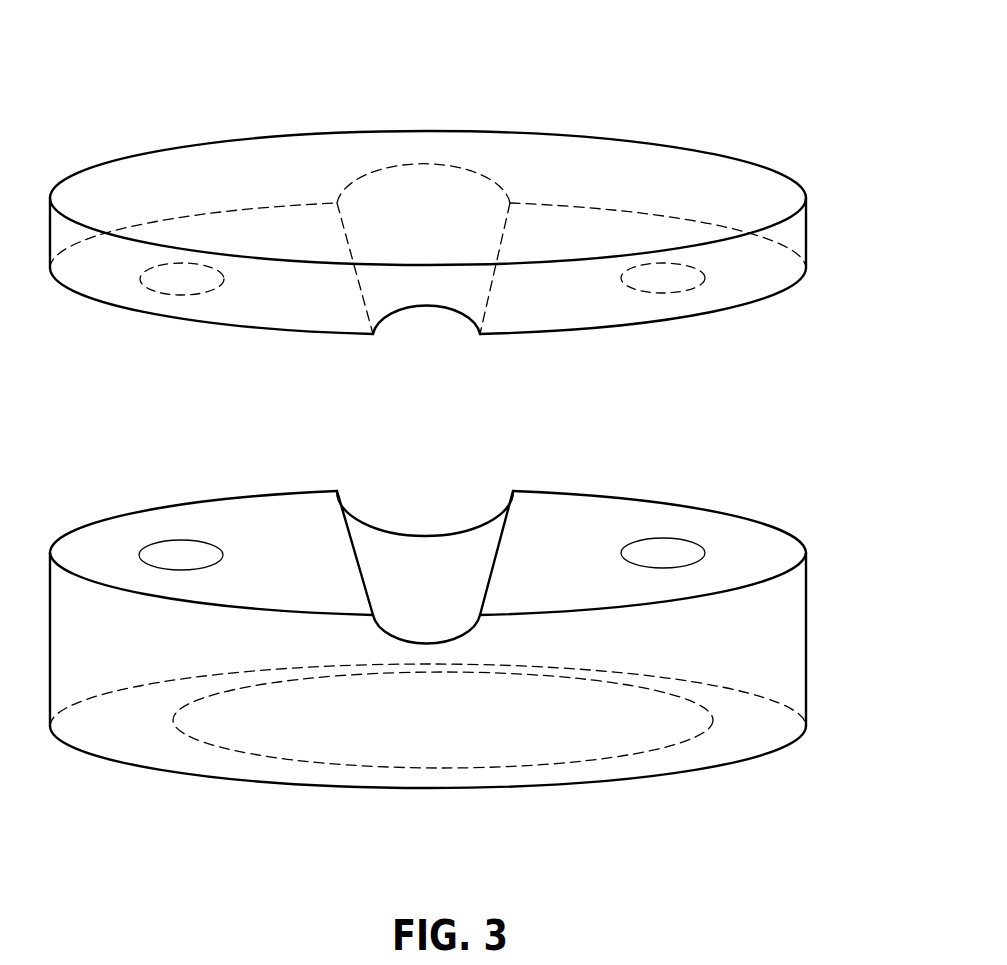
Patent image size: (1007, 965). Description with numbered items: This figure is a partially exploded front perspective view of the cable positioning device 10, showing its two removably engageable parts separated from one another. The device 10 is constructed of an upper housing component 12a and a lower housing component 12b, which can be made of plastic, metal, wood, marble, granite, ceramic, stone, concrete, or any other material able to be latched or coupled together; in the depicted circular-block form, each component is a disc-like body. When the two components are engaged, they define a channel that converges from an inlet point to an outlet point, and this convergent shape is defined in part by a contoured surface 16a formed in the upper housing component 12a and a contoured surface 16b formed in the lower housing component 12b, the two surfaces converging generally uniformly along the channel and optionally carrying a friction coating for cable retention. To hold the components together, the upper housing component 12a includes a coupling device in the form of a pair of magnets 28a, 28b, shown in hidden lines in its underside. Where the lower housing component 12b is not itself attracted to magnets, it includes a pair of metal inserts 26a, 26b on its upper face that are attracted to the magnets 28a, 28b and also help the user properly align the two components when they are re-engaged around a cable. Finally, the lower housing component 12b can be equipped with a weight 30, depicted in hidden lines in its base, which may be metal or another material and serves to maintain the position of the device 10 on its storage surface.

The cable positioning device 10 is at (600, 74).
The upper housing component 12a is at (464, 269).
The lower housing component 12b is at (465, 637).
The contoured surface 16a is at (440, 274).
The contoured surface 16b is at (432, 547).
The metal insert 26a is at (183, 548).
The metal insert 26b is at (663, 538).
The magnet 28a is at (160, 297).
The magnet 28b is at (667, 293).
The weight 30 is at (645, 752).